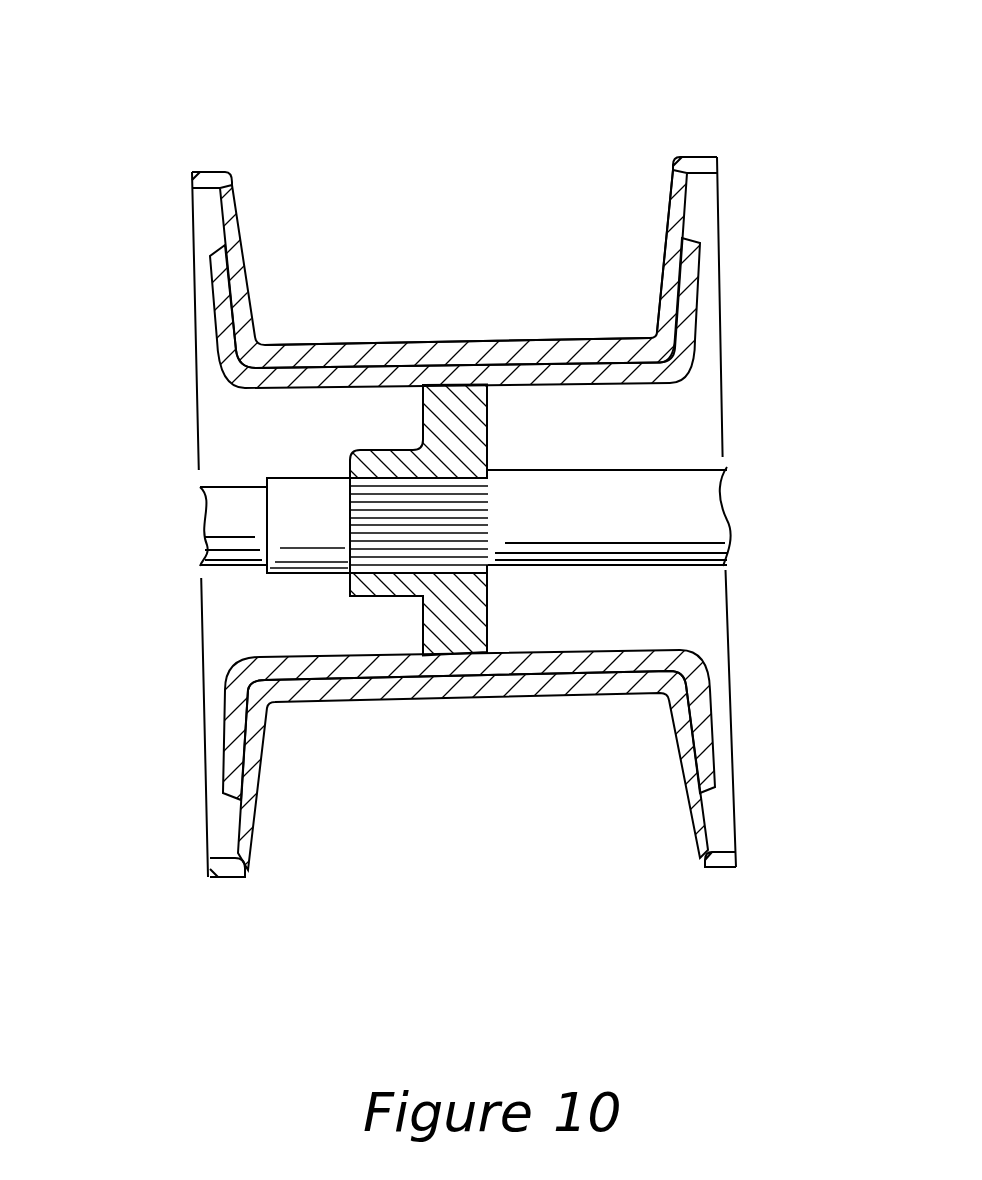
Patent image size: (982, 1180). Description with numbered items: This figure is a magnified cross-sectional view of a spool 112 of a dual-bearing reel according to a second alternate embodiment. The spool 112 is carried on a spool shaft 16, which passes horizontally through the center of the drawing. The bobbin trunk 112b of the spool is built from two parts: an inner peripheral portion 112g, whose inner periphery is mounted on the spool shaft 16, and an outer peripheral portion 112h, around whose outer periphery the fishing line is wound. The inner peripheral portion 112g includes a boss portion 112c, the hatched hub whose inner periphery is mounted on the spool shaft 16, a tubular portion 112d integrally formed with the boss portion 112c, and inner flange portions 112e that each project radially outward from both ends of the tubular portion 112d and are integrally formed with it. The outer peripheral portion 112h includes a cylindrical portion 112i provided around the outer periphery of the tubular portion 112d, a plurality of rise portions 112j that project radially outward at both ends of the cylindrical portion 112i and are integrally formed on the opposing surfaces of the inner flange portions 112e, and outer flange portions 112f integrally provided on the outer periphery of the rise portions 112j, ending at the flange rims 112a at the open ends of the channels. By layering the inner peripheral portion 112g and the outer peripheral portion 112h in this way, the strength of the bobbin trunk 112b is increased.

The spool 112 is at (462, 122).
The flange end cap 112a is at (240, 170).
The bobbin trunk 112b is at (447, 340).
The boss portion 112c is at (425, 423).
The tubular portion 112d is at (613, 385).
The inner flange portions 112e is at (220, 323).
The outer flange portions 112f is at (238, 204).
The inner peripheral portion 112g is at (528, 396).
The outer peripheral portion 112h is at (538, 310).
The cylindrical portion 112i is at (393, 342).
The rise portions 112j is at (240, 265).
The spool shaft 16 is at (585, 505).